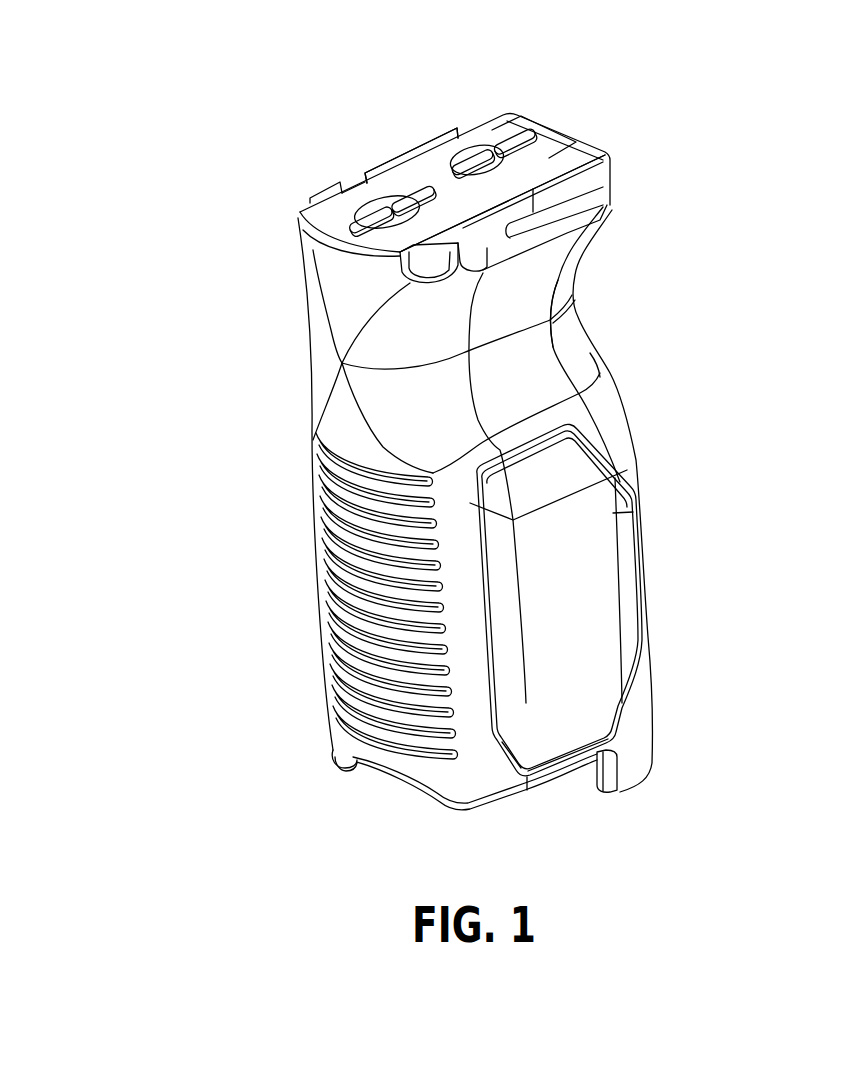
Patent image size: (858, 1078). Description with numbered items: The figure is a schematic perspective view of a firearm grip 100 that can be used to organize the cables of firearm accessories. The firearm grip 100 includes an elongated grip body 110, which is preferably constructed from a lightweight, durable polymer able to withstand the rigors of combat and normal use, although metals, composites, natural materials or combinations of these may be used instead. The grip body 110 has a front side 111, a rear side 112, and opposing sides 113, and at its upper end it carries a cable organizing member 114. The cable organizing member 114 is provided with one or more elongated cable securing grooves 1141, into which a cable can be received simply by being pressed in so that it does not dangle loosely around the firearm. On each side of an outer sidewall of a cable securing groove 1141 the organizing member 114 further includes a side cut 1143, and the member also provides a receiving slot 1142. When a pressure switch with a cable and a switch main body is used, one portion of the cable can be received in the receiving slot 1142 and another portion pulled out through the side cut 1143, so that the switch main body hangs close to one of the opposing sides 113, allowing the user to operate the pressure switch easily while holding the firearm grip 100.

The firearm grip 100 is at (210, 580).
The elongated grip body 110 is at (674, 327).
The front side 111 is at (340, 363).
The rear side 112 is at (580, 310).
The opposing sides 113 is at (587, 553).
The cable organizing member 114 is at (546, 100).
The cable securing groove 1141 is at (433, 287).
The receiving slot 1142 is at (497, 215).
The side cut 1143 is at (507, 242).